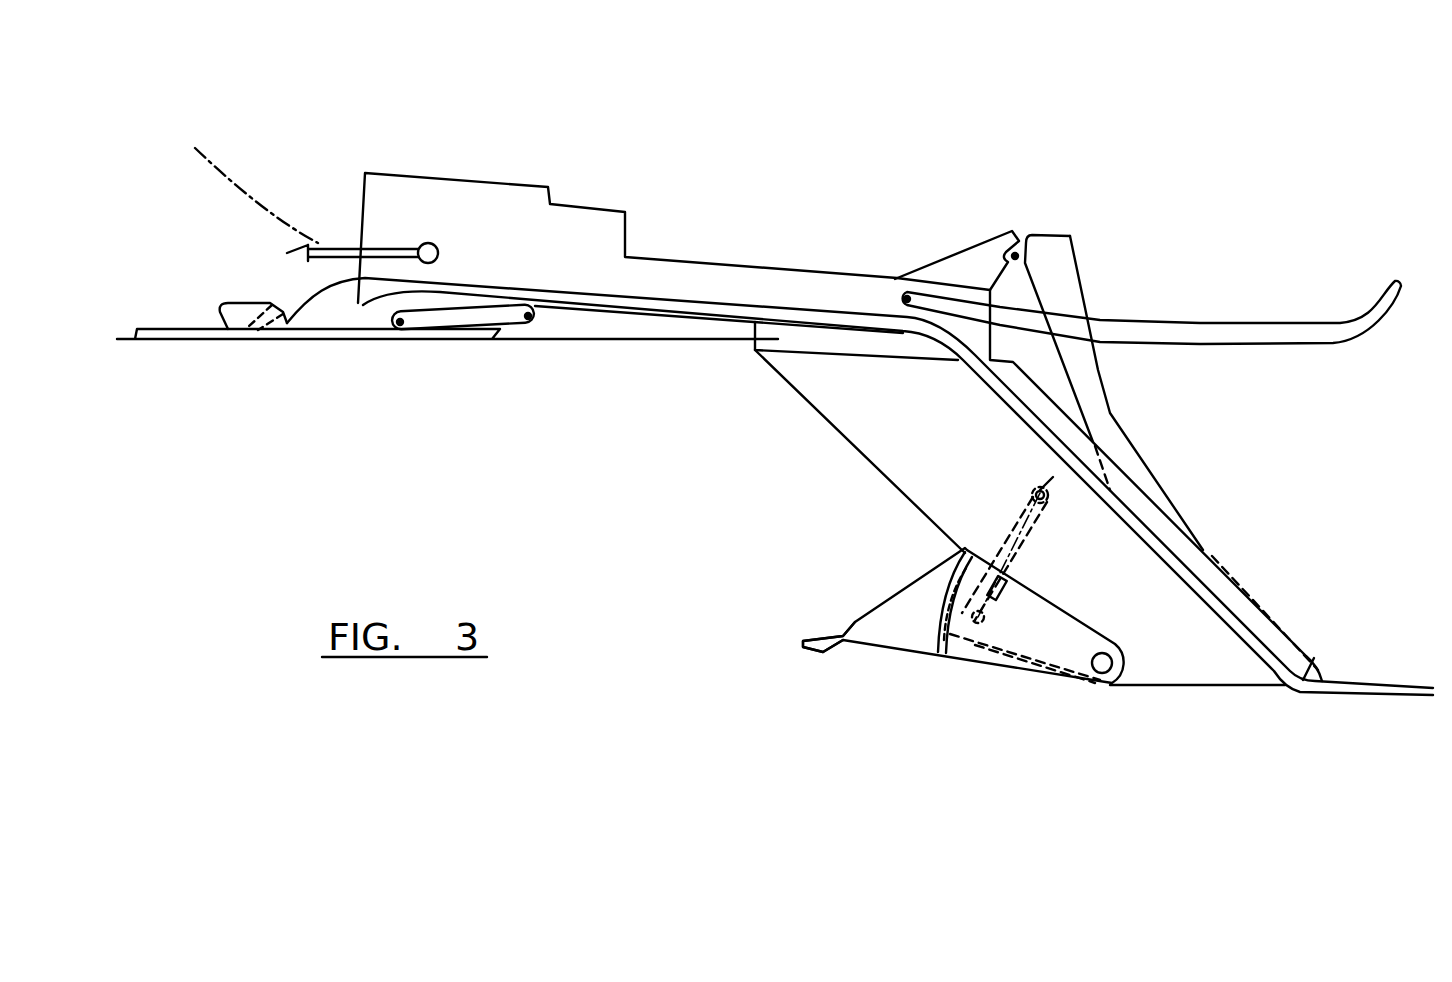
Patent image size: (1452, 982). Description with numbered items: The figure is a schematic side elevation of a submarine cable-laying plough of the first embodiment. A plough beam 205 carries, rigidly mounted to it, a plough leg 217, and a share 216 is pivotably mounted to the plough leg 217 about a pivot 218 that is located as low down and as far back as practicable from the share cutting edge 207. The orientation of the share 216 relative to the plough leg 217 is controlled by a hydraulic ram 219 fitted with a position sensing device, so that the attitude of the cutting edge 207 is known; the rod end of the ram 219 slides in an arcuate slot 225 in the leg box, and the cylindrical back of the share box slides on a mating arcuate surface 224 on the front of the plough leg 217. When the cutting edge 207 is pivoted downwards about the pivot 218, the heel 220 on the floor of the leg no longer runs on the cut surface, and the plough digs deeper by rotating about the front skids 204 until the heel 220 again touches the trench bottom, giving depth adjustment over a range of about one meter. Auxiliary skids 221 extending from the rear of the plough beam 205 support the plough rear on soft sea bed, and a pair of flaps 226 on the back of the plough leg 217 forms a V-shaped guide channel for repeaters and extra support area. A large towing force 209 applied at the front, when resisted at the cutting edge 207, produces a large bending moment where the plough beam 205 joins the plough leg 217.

The front skids 204 is at (257, 315).
The plough beam 205 is at (748, 283).
The share cutting edge 207 is at (800, 650).
The towing force 209 is at (342, 248).
The share 216 is at (1047, 638).
The plough leg 217 is at (912, 457).
The pivot 218 is at (1108, 672).
The hydraulic ram 219 is at (1020, 527).
The heel 220 is at (1013, 660).
The auxiliary skids 221 is at (1237, 330).
The arcuate surface 224 is at (943, 605).
The arcuate slot 225 is at (970, 632).
The flaps 226 is at (1080, 445).